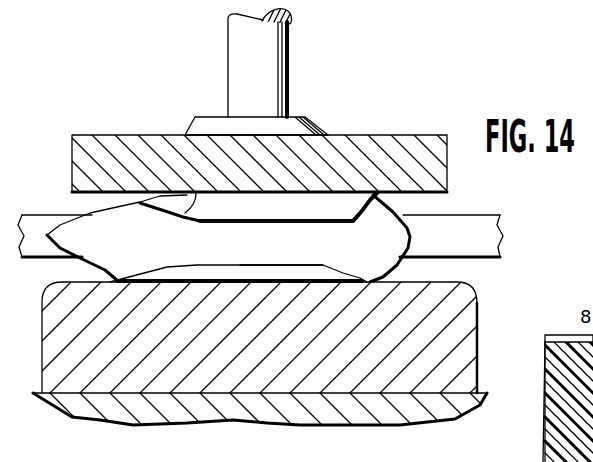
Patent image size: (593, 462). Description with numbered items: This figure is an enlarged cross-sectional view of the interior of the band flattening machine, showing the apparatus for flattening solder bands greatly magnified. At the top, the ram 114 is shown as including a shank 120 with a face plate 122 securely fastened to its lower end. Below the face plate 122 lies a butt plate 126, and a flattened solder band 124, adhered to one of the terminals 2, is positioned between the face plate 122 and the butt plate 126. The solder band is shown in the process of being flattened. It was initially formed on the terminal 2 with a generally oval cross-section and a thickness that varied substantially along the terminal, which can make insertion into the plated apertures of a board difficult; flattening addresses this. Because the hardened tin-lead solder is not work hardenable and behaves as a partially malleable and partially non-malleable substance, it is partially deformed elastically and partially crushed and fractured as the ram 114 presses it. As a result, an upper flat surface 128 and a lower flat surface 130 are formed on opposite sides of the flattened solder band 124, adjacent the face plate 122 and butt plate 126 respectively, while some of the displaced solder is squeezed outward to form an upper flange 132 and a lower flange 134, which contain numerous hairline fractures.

The terminal 2 is at (462, 215).
The ram 114 is at (366, 80).
The shank 120 is at (290, 38).
The face plate 122 is at (377, 143).
The flattened solder band 124 is at (73, 233).
The butt plate 126 is at (458, 295).
The upper flat surface 128 is at (170, 217).
The lower flat surface 130 is at (222, 278).
The upper flange 132 is at (293, 222).
The lower flange 134 is at (252, 270).